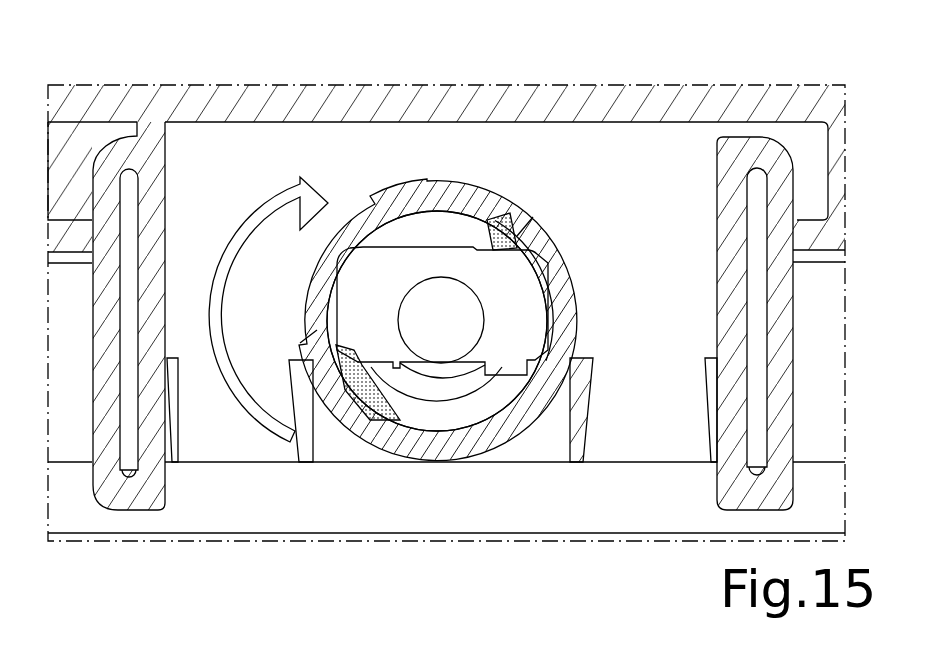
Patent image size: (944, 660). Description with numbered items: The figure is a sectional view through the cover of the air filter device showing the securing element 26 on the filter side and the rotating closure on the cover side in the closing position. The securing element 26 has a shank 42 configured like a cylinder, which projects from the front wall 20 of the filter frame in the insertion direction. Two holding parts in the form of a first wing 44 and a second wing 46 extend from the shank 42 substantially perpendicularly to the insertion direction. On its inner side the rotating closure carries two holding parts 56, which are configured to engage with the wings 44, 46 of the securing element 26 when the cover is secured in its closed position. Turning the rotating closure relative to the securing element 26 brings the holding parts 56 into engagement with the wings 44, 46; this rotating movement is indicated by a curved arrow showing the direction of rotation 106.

The front wall 20 is at (645, 148).
The securing element 26 is at (458, 214).
The shank 42 is at (417, 248).
The first wing 44 is at (518, 308).
The second wing 46 is at (367, 288).
The holding parts 56 is at (520, 218).
The direction of rotation 106 is at (240, 233).